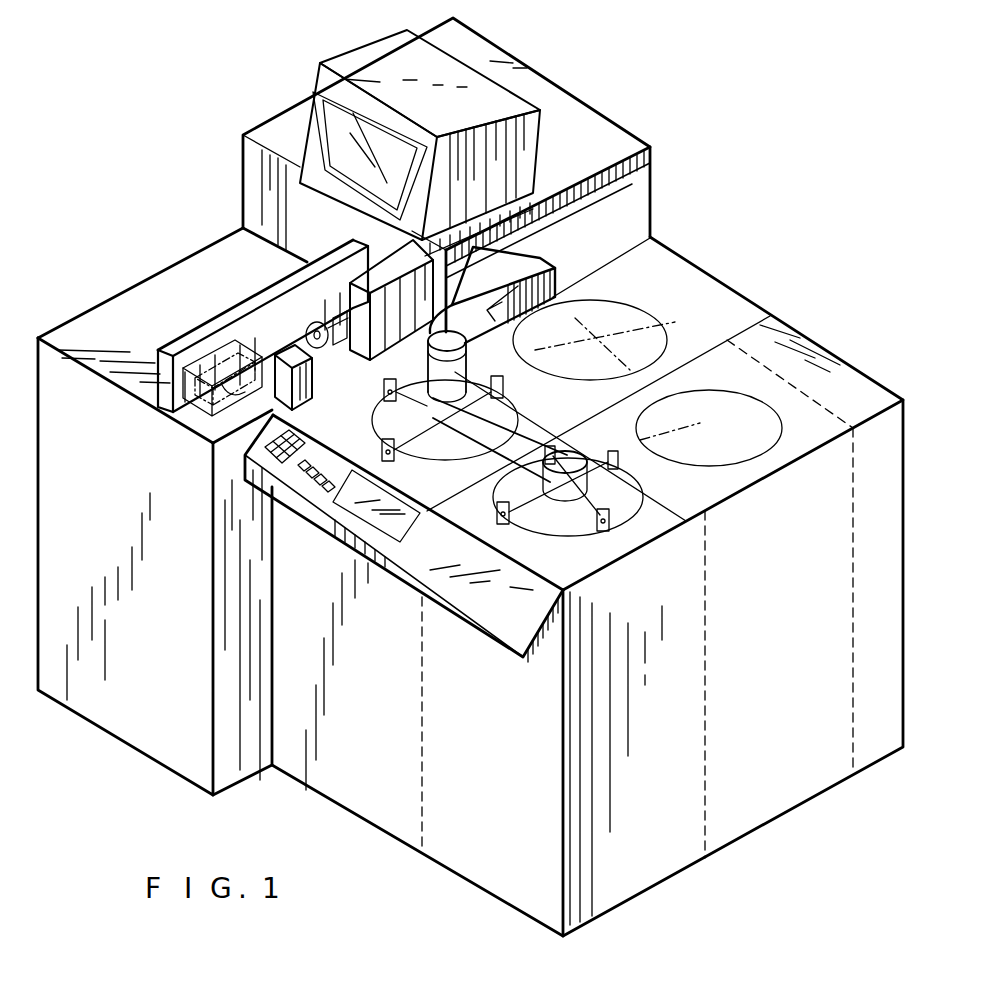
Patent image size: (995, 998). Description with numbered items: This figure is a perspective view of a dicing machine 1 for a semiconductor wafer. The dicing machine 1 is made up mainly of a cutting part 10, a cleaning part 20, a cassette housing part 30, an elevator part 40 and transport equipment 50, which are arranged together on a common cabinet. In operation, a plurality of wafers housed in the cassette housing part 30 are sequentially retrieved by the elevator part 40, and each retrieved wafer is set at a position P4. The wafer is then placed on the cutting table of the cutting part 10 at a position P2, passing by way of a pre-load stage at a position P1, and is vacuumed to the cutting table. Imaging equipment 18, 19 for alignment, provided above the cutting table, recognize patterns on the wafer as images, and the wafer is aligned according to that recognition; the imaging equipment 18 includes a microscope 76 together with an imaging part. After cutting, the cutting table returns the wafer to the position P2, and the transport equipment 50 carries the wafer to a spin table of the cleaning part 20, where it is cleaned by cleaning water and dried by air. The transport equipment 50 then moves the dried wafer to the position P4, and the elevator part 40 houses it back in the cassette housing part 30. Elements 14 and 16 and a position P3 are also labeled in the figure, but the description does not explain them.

The dicing machine 1 is at (212, 118).
The cutting part 10 is at (290, 327).
The carriage block 14 is at (335, 290).
The loading station 16 is at (195, 413).
The imaging equipment 18 is at (333, 282).
The imaging equipment 19 is at (240, 335).
The cleaning part 20 is at (610, 318).
The cassette housing part 30 is at (642, 783).
The elevator part 40 is at (776, 690).
The transport equipment 50 is at (532, 265).
The microscope 76 is at (230, 310).
The position P1 is at (568, 476).
The position P2 is at (445, 398).
The wafer position 3 P3 is at (602, 368).
The position P4 is at (700, 422).